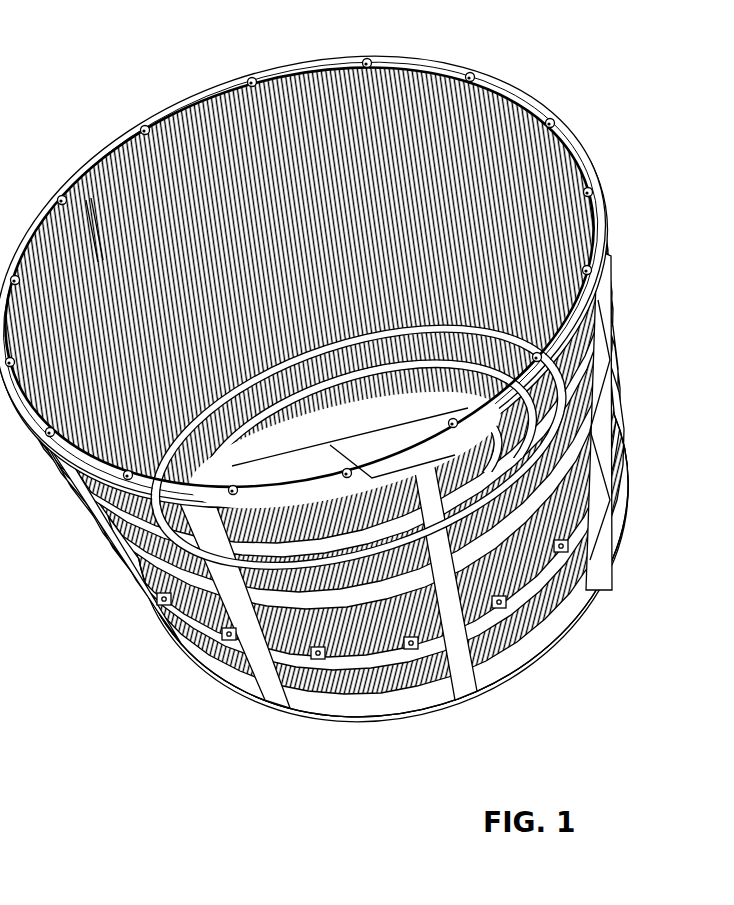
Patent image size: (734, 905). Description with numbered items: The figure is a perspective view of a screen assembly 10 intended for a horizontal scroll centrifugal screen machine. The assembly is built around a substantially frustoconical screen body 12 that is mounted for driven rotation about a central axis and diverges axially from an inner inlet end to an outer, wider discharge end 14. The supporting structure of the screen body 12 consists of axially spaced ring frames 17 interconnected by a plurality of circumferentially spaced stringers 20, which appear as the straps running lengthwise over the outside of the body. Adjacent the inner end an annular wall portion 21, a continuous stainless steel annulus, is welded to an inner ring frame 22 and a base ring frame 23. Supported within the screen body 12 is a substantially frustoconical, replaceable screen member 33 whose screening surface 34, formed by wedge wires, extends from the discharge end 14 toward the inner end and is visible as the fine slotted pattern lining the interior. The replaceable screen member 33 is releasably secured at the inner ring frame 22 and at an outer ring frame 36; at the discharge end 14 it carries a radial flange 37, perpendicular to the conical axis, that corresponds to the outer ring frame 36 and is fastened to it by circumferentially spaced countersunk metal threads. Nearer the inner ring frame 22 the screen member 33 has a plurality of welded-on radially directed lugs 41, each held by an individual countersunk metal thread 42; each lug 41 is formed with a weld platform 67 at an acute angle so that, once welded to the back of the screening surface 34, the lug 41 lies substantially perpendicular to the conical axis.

The screen assembly 10 is at (153, 637).
The screen body 12 is at (590, 490).
The discharge end 14 is at (487, 108).
The ring frames 17 is at (280, 603).
The stringers 20 is at (468, 675).
The annular wall portion 21 is at (380, 700).
The inner ring frame 22 is at (542, 572).
The base ring frame 23 is at (585, 598).
The replaceable screen member 33 is at (510, 563).
The screening surface 34 is at (97, 247).
The outer ring frame 36 is at (597, 283).
The radial flange 37 is at (563, 133).
The lugs 41 is at (563, 546).
The countersunk metal threads 42 is at (167, 603).
The weld platform 67 is at (413, 633).